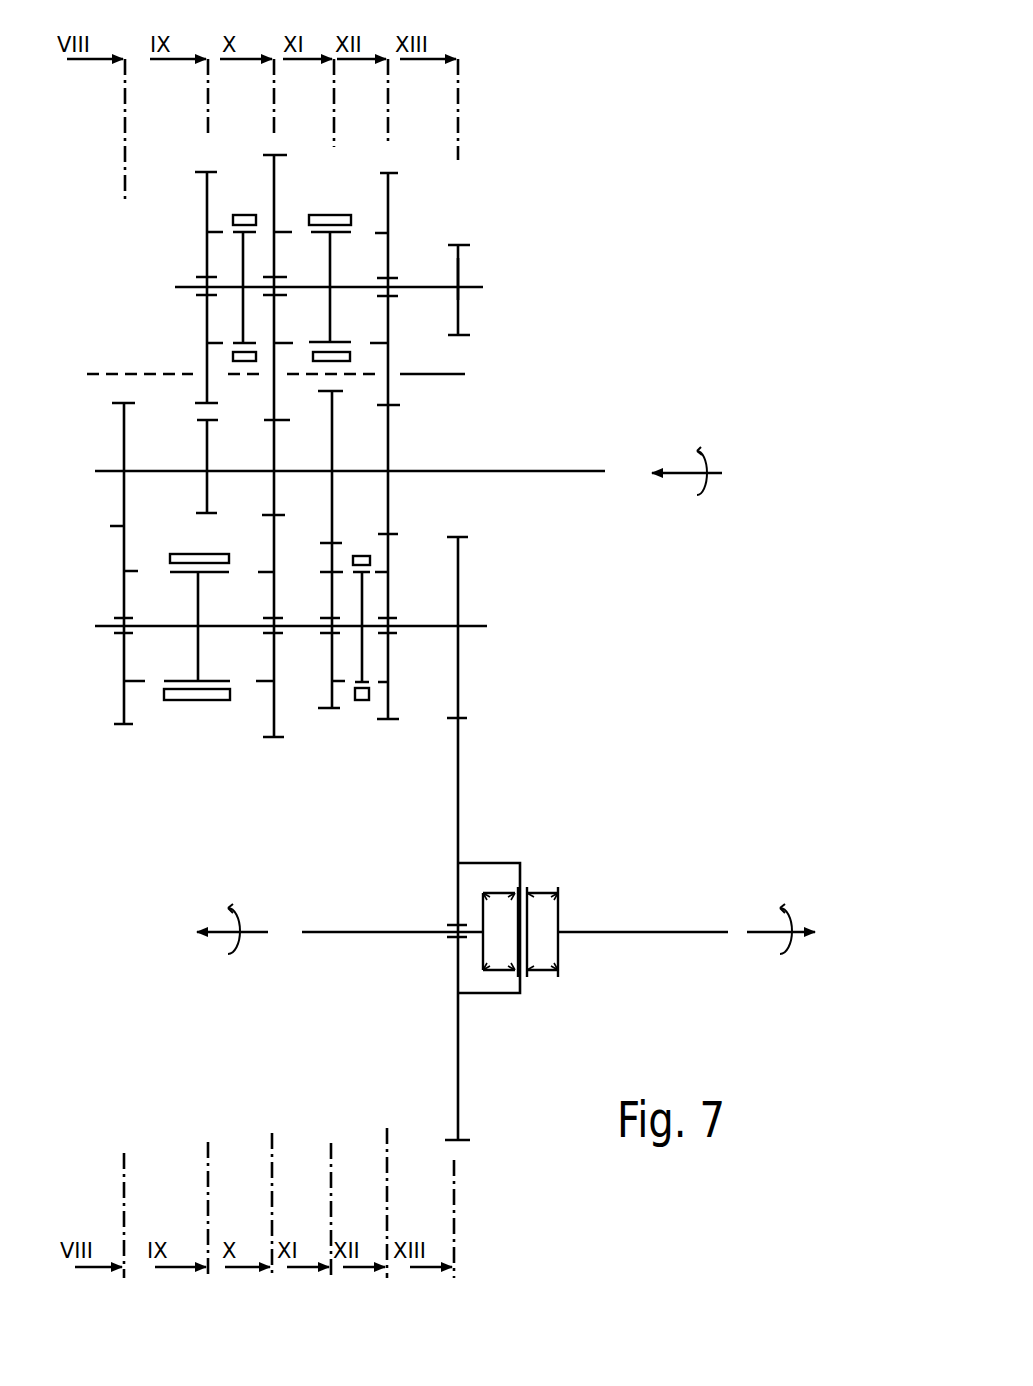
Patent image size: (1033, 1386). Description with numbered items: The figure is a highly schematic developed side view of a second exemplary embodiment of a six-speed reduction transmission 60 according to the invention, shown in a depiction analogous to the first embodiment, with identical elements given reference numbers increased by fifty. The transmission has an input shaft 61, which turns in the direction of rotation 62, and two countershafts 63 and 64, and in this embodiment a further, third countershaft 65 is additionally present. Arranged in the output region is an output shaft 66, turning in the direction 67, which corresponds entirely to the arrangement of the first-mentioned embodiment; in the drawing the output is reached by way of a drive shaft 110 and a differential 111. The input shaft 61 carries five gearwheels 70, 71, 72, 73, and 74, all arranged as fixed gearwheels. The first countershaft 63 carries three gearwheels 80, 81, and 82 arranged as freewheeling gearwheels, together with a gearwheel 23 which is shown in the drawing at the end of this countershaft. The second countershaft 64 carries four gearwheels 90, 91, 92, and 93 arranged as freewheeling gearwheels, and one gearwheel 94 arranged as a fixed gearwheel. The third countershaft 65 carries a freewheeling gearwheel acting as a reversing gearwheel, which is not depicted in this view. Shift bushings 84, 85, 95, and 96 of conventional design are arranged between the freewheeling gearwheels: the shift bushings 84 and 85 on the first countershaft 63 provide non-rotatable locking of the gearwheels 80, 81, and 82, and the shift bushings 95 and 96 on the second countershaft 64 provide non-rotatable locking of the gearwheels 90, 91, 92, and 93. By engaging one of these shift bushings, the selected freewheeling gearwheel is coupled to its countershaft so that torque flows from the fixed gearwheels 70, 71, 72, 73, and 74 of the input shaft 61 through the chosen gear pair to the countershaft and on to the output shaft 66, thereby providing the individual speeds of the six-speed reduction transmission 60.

The gear 23 is at (458, 268).
The transmission 60 is at (605, 258).
The input shaft 61 is at (562, 471).
The direction of rotation of input shaft 62 is at (672, 471).
The first countershaft 63 is at (471, 287).
The second countershaft 64 is at (480, 626).
The third countershaft 65 is at (445, 378).
The output shaft 66 is at (362, 932).
The direction of rotation of output shafts 67 is at (252, 930).
The gearwheel 70 is at (124, 440).
The gearwheel 71 is at (207, 448).
The gearwheel 72 is at (274, 447).
The gearwheel 73 is at (332, 448).
The gearwheel 74 is at (389, 437).
The gearwheel 80 is at (207, 200).
The gearwheel 81 is at (275, 192).
The gearwheel 82 is at (389, 198).
The shift bushing 84 is at (243, 212).
The shift bushing 85 is at (331, 212).
The gearwheel 90 is at (124, 555).
The gearwheel 91 is at (274, 545).
The gearwheel 92 is at (329, 556).
The gearwheel 93 is at (389, 553).
The gearwheel 94 is at (459, 558).
The shift bushing 95 is at (185, 552).
The shift bushing 96 is at (362, 553).
The drive shaft 110 is at (458, 788).
The differential 111 is at (552, 880).